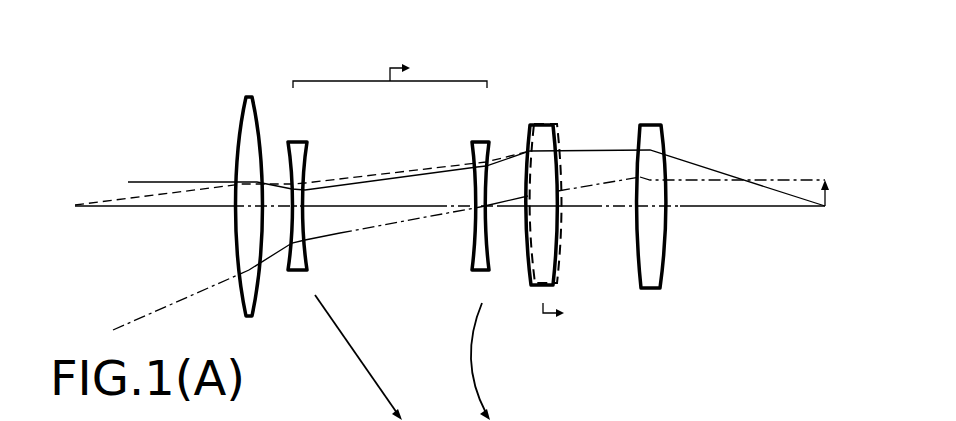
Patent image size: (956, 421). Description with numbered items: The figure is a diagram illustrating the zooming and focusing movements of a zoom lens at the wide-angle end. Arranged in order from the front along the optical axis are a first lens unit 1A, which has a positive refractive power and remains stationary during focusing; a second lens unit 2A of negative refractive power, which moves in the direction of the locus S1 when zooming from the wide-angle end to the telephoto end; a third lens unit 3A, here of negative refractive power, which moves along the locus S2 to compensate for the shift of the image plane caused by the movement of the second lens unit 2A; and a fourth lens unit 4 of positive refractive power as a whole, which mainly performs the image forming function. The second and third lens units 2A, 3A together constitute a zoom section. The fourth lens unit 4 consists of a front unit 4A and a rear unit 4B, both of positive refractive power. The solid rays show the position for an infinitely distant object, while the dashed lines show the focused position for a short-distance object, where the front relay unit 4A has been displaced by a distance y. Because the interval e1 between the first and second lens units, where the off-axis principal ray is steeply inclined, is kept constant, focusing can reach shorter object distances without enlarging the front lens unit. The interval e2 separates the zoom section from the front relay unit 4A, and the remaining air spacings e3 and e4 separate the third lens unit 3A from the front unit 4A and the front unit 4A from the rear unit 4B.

The first lens unit 1A is at (250, 96).
The second lens unit 2A is at (299, 142).
The third lens unit 3A is at (480, 141).
The fourth lens unit 4 is at (672, 82).
The front unit 4A is at (540, 125).
The rear unit 4B is at (647, 125).
The interval between the first and second lens units e1 is at (280, 234).
The interval between the zoom section and the front relay unit e2 is at (385, 244).
The air spacing between third and fourth lens groups e3 is at (506, 241).
The air spacing between lenses 4A and 4B e4 is at (595, 242).
The locus of the second lens unit S1 is at (358, 357).
The locus of the third lens unit S2 is at (484, 361).
The movement distance of the fourth lens unit y is at (553, 324).